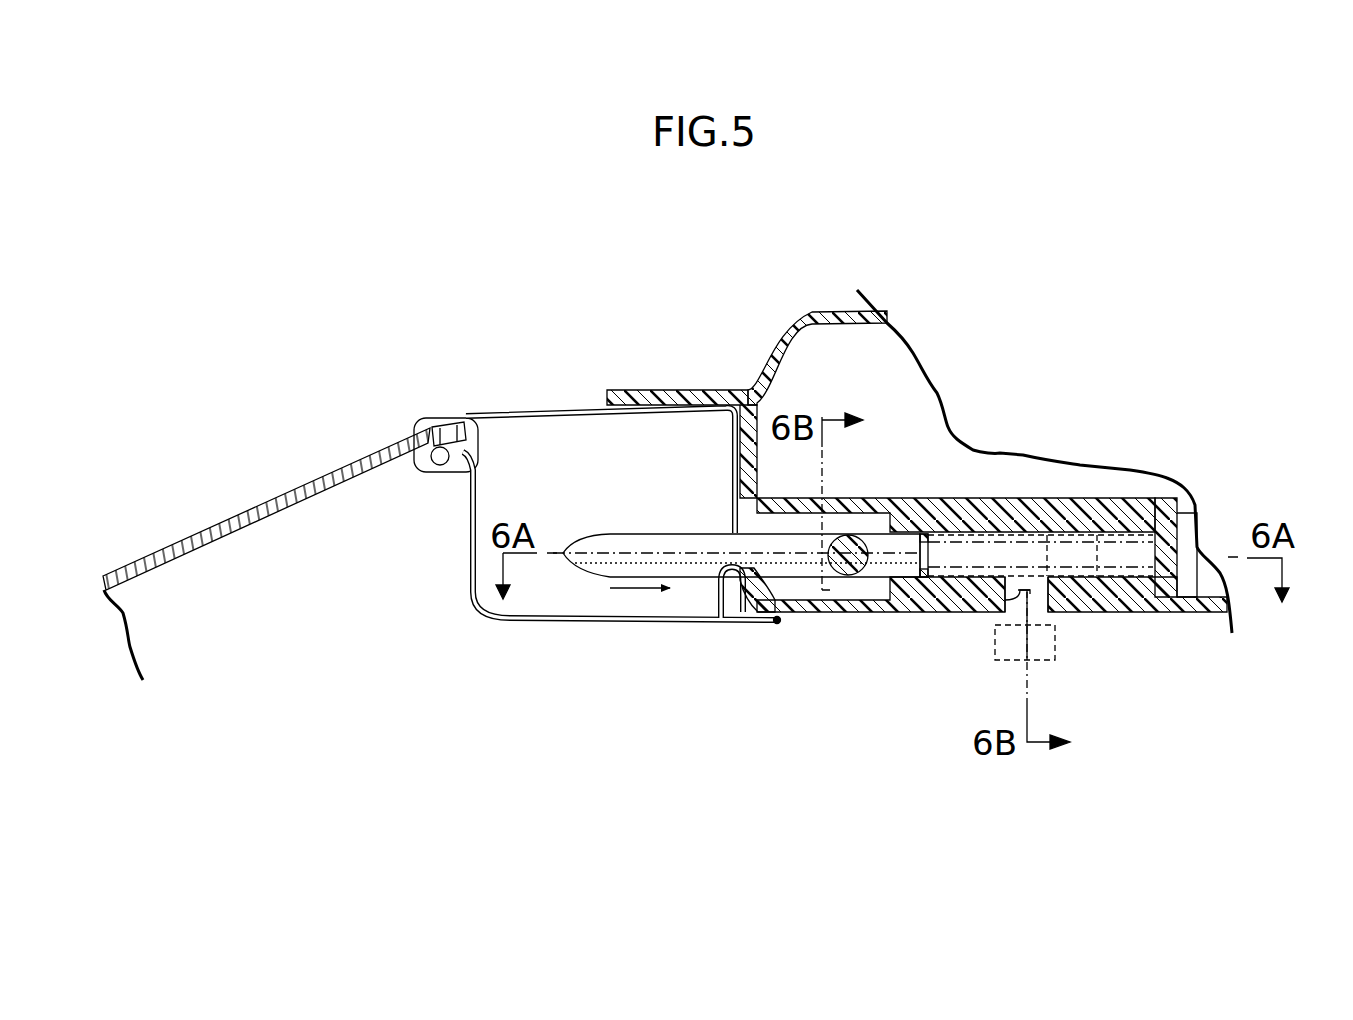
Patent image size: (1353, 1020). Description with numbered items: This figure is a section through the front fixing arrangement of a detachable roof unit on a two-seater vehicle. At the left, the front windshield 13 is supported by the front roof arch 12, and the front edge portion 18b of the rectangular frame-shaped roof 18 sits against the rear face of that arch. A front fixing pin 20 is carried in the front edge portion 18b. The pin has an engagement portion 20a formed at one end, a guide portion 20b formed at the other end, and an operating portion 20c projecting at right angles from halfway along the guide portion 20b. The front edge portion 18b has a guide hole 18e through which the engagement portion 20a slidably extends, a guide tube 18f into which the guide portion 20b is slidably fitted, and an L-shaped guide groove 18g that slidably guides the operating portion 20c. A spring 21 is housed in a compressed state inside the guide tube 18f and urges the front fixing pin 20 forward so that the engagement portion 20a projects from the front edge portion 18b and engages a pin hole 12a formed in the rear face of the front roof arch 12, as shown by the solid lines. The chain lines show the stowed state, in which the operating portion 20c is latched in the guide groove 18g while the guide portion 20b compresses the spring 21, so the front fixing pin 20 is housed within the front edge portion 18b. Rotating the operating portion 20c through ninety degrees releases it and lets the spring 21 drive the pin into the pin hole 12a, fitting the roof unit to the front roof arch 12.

The front roof arch 12 is at (526, 402).
The pin hole 12a is at (732, 540).
The front windshield 13 is at (277, 485).
The frame-shaped roof 18 is at (826, 298).
The front edge portion 18b is at (805, 318).
The guide hole 18e is at (731, 570).
The guide tube 18f is at (1010, 497).
The L-shaped guide groove 18g is at (1013, 612).
The front fixing pin 20 is at (643, 527).
The engagement portion 20a is at (612, 568).
The guide portion 20b is at (800, 570).
The operating portion 20c is at (853, 578).
The spring 21 is at (1158, 502).